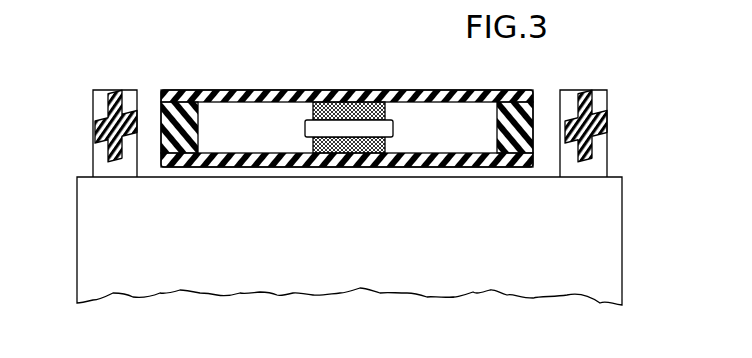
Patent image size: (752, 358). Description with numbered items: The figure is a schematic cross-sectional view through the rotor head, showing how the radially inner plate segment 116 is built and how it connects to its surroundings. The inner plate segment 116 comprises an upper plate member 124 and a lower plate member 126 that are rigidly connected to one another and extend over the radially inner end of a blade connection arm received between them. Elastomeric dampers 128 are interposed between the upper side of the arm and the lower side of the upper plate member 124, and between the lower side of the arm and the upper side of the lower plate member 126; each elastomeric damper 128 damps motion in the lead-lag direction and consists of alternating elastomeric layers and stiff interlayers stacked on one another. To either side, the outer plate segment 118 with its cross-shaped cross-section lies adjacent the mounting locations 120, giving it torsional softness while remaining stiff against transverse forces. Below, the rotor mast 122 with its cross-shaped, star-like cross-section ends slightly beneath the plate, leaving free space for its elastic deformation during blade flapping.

The radially inner plate segment 116 is at (347, 118).
The outer plate segment 118 is at (97, 127).
The mounting locations 120 is at (115, 98).
The rotor mast 122 is at (600, 240).
The upper plate member 124 is at (247, 100).
The lower plate member 126 is at (237, 168).
The elastomeric damper 128 is at (384, 98).